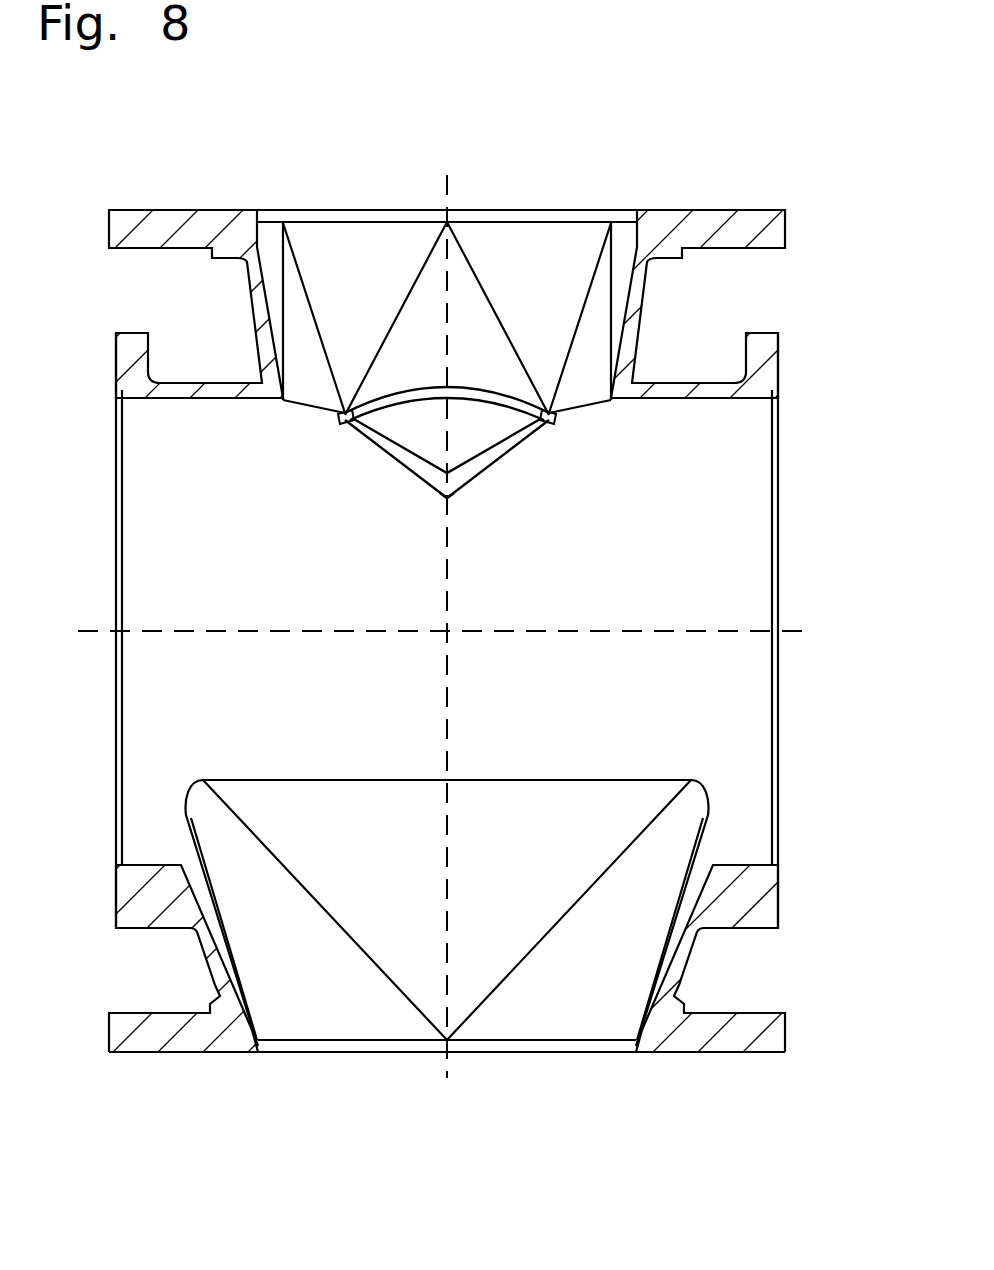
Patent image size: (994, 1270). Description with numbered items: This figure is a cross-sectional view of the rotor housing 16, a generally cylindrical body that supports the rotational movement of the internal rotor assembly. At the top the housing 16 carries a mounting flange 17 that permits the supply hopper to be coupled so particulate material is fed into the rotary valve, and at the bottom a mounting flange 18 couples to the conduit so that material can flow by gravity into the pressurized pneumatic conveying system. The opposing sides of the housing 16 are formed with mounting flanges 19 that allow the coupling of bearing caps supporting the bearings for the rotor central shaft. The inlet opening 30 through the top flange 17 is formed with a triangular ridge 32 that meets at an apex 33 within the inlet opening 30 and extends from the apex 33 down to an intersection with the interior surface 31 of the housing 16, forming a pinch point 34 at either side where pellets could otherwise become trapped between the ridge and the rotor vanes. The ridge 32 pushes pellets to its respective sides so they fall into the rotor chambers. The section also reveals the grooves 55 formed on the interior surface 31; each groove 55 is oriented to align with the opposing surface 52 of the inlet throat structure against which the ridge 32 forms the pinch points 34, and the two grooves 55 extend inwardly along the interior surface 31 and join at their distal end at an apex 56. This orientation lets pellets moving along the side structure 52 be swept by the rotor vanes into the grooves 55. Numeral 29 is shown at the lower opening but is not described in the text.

The rotor housing 16 is at (495, 577).
The mounting flange 17 is at (176, 212).
The mounting flange 18 is at (680, 1050).
The mounting flanges 19 is at (120, 353).
The lower conical insert 29 is at (395, 1080).
The inlet opening 30 is at (448, 333).
The interior surface 31 is at (717, 597).
The triangular ridge 32 is at (468, 385).
The apex 33 is at (435, 393).
The pinch point 34 is at (340, 428).
The opposing surface 52 is at (305, 395).
The groove 55 is at (405, 467).
The apex 56 is at (448, 498).